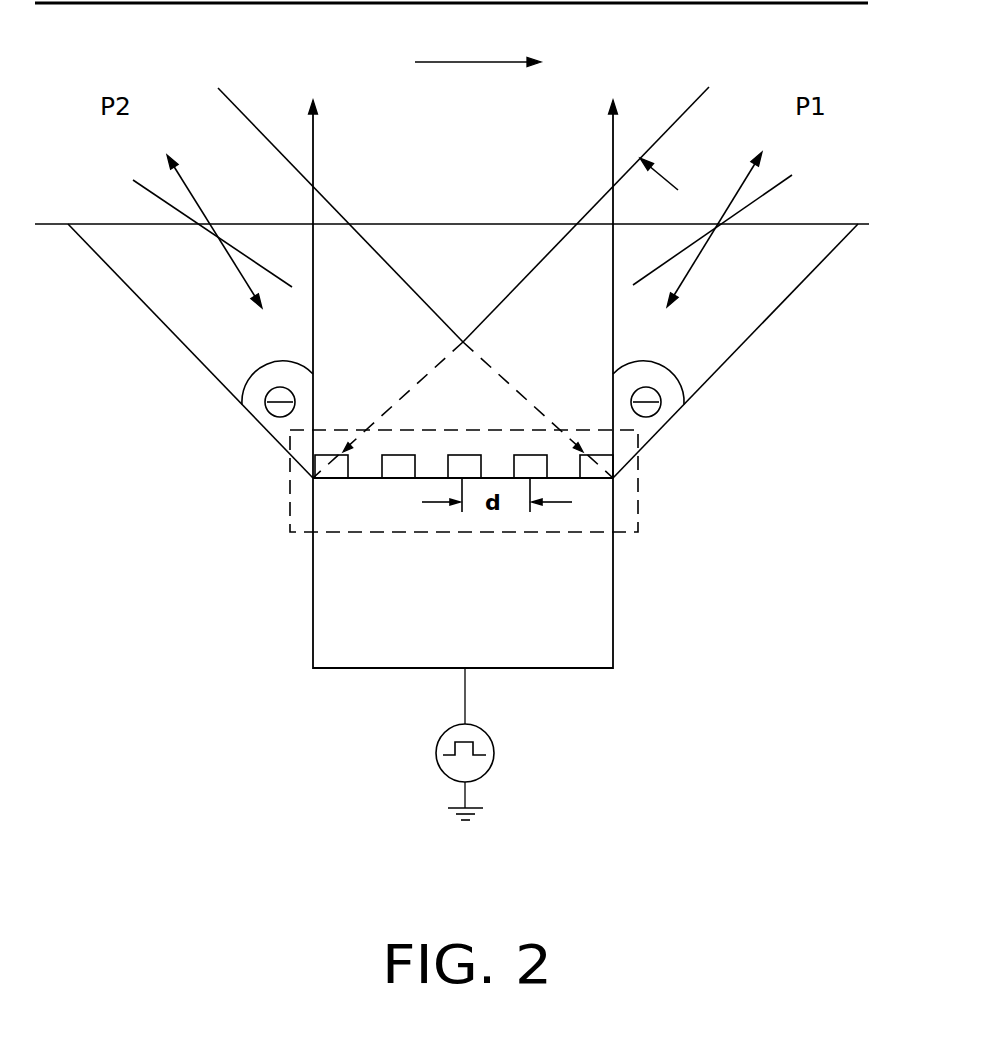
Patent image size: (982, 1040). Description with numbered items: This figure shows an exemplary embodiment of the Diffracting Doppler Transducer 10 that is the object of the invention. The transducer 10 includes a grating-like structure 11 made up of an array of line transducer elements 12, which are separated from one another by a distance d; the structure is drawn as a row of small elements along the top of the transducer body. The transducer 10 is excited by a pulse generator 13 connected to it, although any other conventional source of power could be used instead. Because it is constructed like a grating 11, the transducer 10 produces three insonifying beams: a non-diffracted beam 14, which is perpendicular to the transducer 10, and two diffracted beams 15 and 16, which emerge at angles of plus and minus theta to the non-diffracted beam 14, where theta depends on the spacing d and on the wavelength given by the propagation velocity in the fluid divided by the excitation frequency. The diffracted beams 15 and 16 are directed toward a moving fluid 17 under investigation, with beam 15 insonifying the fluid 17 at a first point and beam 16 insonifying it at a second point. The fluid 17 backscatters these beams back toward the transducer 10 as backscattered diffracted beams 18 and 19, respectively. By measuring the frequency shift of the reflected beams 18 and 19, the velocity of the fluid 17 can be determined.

The Diffracting Doppler Transducer 10 is at (328, 634).
The grating-like structure 11 is at (638, 532).
The line transducer elements 12 is at (397, 470).
The pulse generator 13 is at (494, 749).
The non-diffracted beam 14 is at (313, 145).
The diffracted beam 15 is at (677, 167).
The diffracted beam 16 is at (212, 231).
The moving fluid 17 is at (478, 49).
The backscattered diffracted beam 18 is at (782, 287).
The backscattered diffracted beam 19 is at (190, 351).